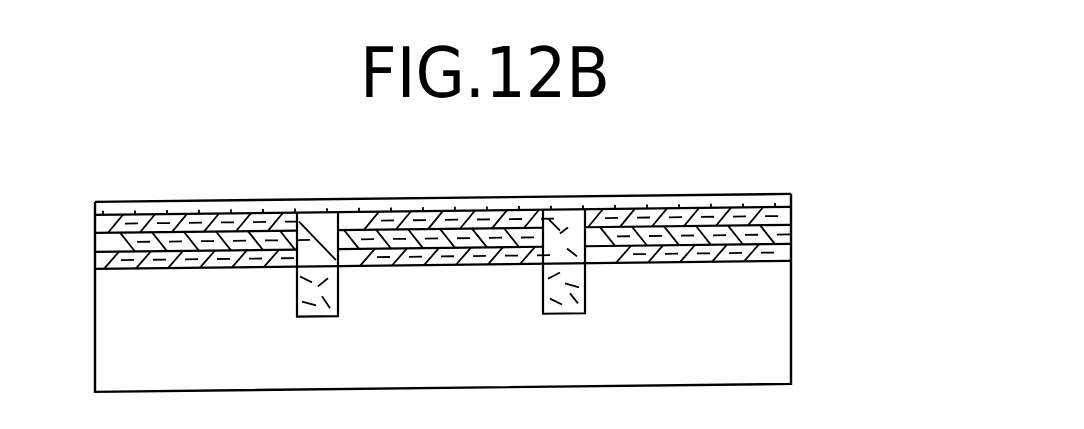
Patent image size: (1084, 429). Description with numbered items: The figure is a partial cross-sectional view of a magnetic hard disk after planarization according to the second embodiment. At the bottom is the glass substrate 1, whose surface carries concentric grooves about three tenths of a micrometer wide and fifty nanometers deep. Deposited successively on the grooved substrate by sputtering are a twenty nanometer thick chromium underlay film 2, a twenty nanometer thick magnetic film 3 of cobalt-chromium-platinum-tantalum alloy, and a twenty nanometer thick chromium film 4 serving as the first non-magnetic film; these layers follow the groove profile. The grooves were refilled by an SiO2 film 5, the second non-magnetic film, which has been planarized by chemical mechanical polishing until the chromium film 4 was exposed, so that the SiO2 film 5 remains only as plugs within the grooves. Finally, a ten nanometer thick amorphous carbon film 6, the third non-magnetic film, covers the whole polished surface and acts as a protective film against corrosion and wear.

The glass substrate 1 is at (523, 293).
The Chromium film 2 is at (790, 253).
The magnetic film 3 is at (790, 235).
The Chromium film 4 is at (790, 217).
The SiO2 film 5 is at (570, 217).
The amorphous carbon film 6 is at (790, 200).